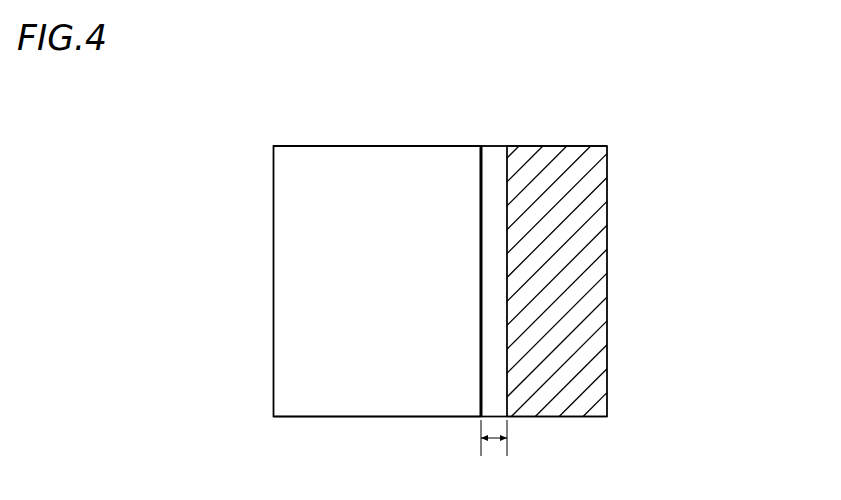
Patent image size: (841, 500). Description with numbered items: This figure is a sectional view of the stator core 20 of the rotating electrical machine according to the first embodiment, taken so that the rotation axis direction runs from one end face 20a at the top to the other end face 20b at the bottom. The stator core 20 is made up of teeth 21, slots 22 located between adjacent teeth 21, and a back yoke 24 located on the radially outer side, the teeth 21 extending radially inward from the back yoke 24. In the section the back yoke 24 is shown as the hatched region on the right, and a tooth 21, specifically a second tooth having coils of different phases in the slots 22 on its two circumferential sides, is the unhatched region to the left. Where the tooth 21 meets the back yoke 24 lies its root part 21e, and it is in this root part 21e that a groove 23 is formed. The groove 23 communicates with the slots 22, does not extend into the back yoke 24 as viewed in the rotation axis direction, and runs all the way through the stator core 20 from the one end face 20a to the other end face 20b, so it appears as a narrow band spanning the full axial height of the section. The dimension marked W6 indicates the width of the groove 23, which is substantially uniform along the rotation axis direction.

The stator core 20 is at (658, 155).
The one end face 20a is at (592, 146).
The other end face 20b is at (568, 417).
The teeth 21 is at (350, 146).
The slots 22 is at (375, 208).
The grooves 23 is at (505, 218).
The root parts 21e is at (506, 146).
The back yoke 24 is at (543, 146).
The width W6 is at (496, 457).